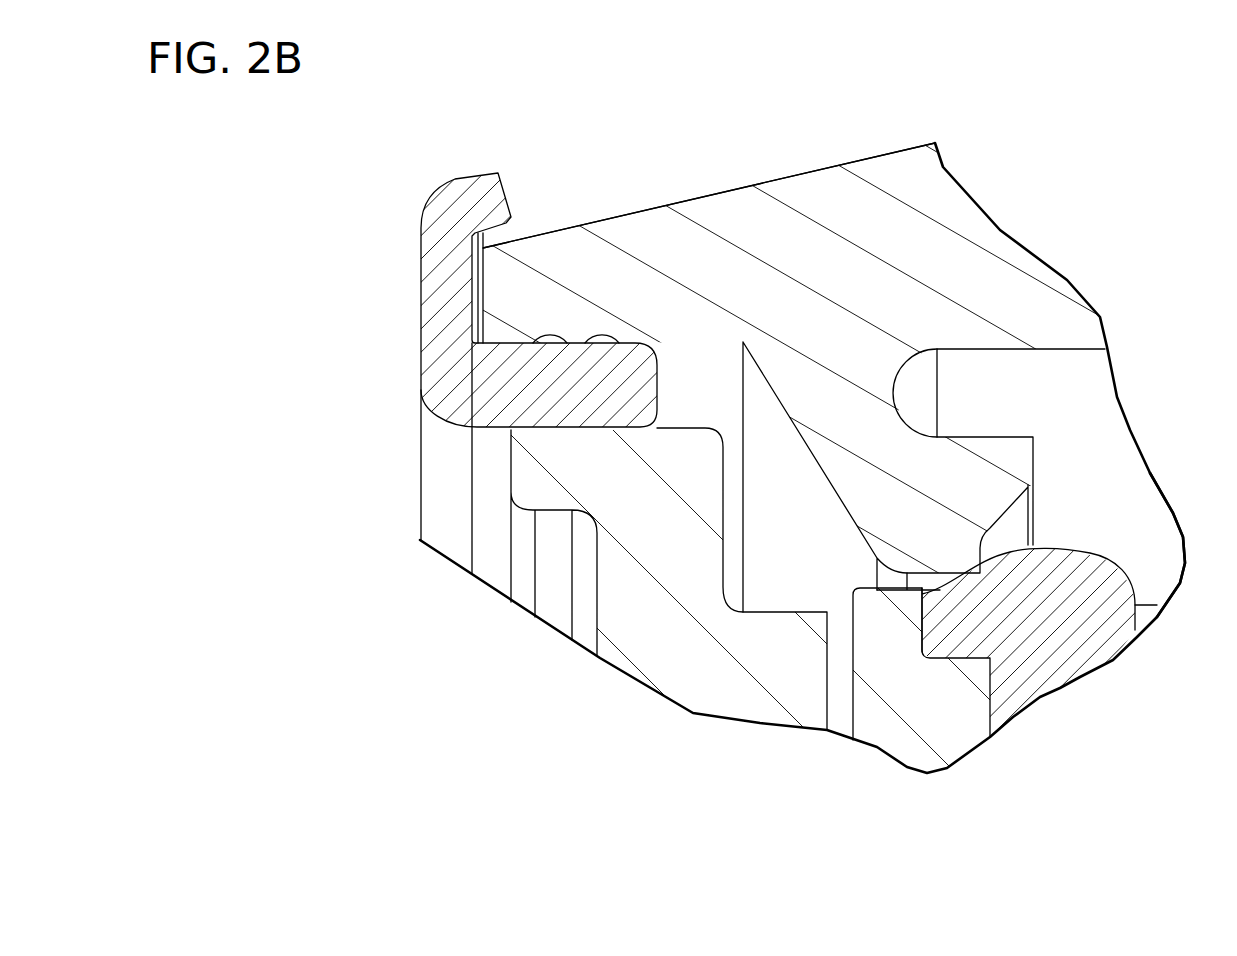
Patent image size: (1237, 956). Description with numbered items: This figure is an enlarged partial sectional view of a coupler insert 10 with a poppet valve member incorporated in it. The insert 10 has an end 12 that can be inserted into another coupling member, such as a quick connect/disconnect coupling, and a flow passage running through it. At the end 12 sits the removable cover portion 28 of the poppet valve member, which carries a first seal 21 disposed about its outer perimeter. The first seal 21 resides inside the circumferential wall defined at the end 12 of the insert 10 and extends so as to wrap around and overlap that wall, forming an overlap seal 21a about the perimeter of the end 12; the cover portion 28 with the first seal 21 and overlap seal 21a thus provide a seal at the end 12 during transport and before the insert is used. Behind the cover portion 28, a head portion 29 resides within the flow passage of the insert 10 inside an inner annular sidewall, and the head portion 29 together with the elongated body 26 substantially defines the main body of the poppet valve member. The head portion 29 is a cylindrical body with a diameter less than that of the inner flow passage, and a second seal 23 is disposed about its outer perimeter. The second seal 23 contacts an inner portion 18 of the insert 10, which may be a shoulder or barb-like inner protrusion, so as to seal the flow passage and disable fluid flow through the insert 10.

The coupler insert 10 is at (823, 173).
The end 12 is at (615, 216).
The inner portion 18 is at (967, 573).
The first seal 21 is at (602, 336).
The overlap seal 21a is at (420, 246).
The second seal 23 is at (1073, 548).
The elongated body 26 is at (1155, 605).
The removable cover portion 28 is at (600, 658).
The head portion 29 is at (853, 703).